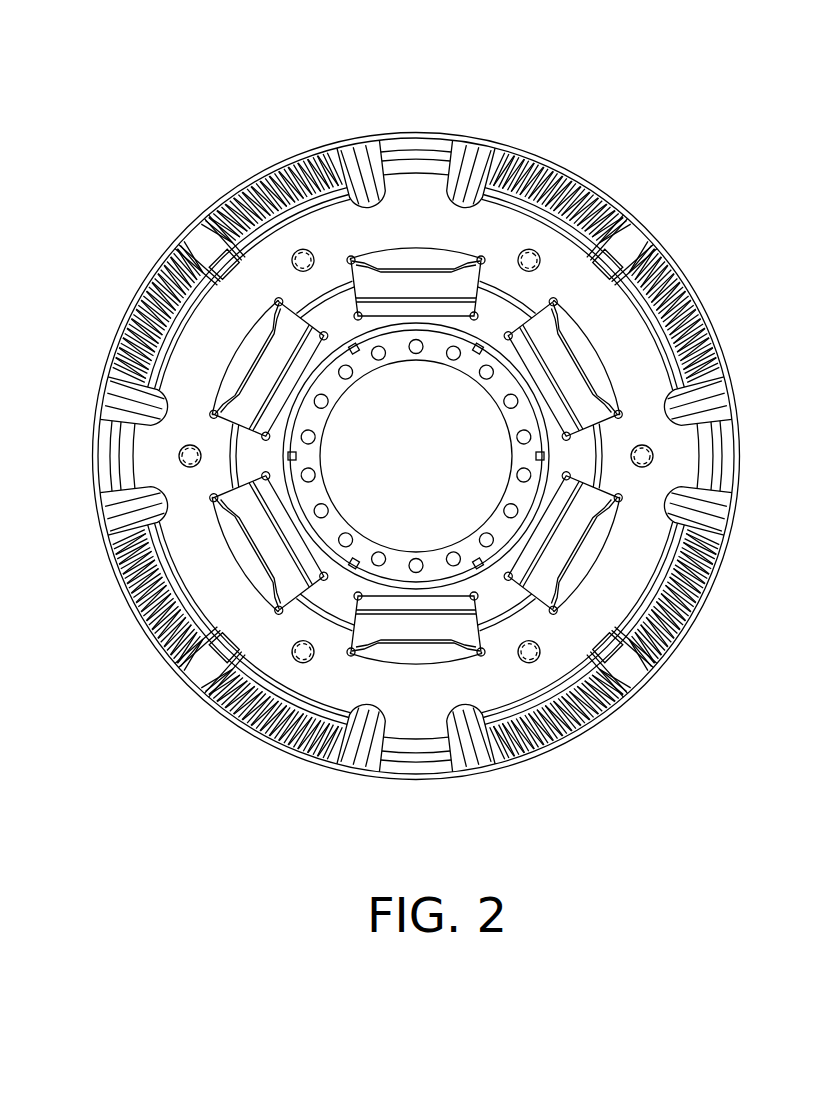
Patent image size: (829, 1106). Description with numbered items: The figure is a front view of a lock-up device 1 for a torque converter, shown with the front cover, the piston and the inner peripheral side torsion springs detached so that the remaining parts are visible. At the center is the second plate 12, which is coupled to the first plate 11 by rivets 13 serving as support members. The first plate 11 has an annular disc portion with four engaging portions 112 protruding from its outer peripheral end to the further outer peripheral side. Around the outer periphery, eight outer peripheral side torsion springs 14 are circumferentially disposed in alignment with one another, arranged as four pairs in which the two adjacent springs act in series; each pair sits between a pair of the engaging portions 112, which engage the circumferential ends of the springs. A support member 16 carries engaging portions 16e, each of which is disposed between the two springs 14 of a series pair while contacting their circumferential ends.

The lock-up device 1 is at (97, 106).
The first plate 11 is at (505, 228).
The engaging portion 112 is at (440, 150).
The second plate 12 is at (470, 370).
The rivet 13 is at (182, 462).
The outer peripheral side torsion spring 14 is at (237, 200).
The support member 16 is at (345, 160).
The engaging portion 16e is at (193, 243).